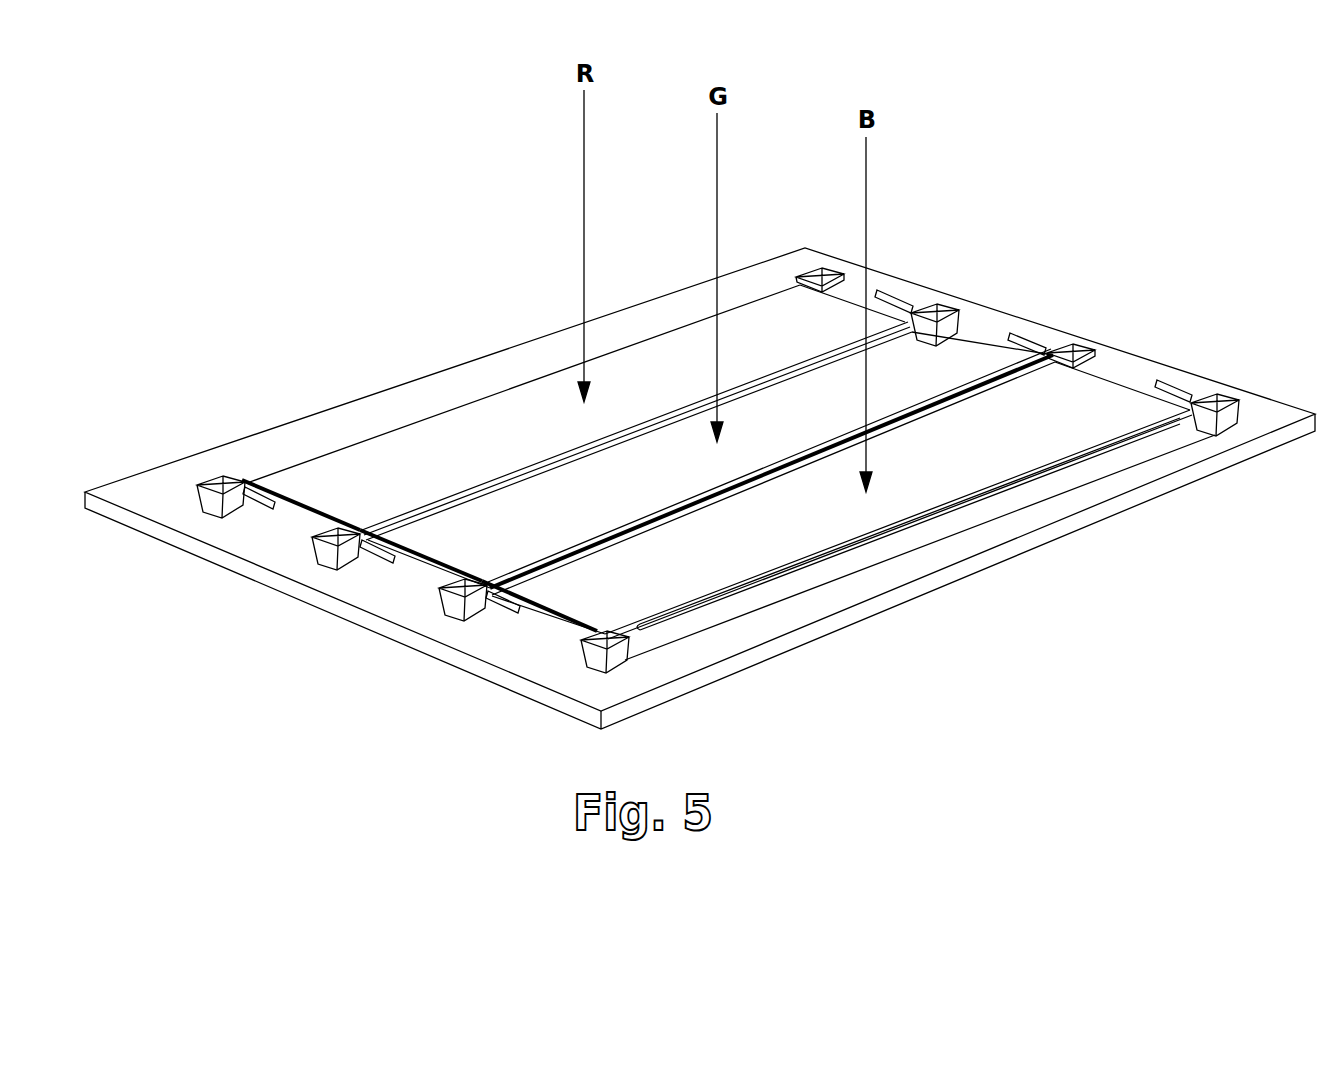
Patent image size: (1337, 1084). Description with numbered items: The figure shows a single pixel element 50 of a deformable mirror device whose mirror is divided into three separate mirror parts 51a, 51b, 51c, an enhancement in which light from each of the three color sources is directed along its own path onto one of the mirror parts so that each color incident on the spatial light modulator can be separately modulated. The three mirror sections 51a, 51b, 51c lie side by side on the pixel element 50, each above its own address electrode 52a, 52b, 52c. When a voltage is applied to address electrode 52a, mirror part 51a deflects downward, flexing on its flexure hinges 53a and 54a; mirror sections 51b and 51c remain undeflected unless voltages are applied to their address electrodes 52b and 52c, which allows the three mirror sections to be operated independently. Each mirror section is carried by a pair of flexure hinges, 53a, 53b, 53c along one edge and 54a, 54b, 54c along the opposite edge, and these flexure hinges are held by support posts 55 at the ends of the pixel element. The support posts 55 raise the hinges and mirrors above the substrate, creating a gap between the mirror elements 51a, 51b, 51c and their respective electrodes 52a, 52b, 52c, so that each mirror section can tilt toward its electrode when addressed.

The pixel element 50 is at (512, 292).
The mirror part 51a is at (853, 511).
The mirror section 51b is at (711, 463).
The mirror section 51c is at (579, 412).
The address electrode 52a is at (545, 614).
The address electrode 52b is at (415, 565).
The address electrode 52c is at (285, 528).
The flexure hinge 53a is at (1195, 385).
The flexure hinge 53b is at (1033, 340).
The flexure hinge 53c is at (895, 292).
The flexure hinge 54a is at (500, 608).
The flexure hinge 54b is at (375, 558).
The flexure hinge 54c is at (245, 508).
The support post 55 is at (200, 503).